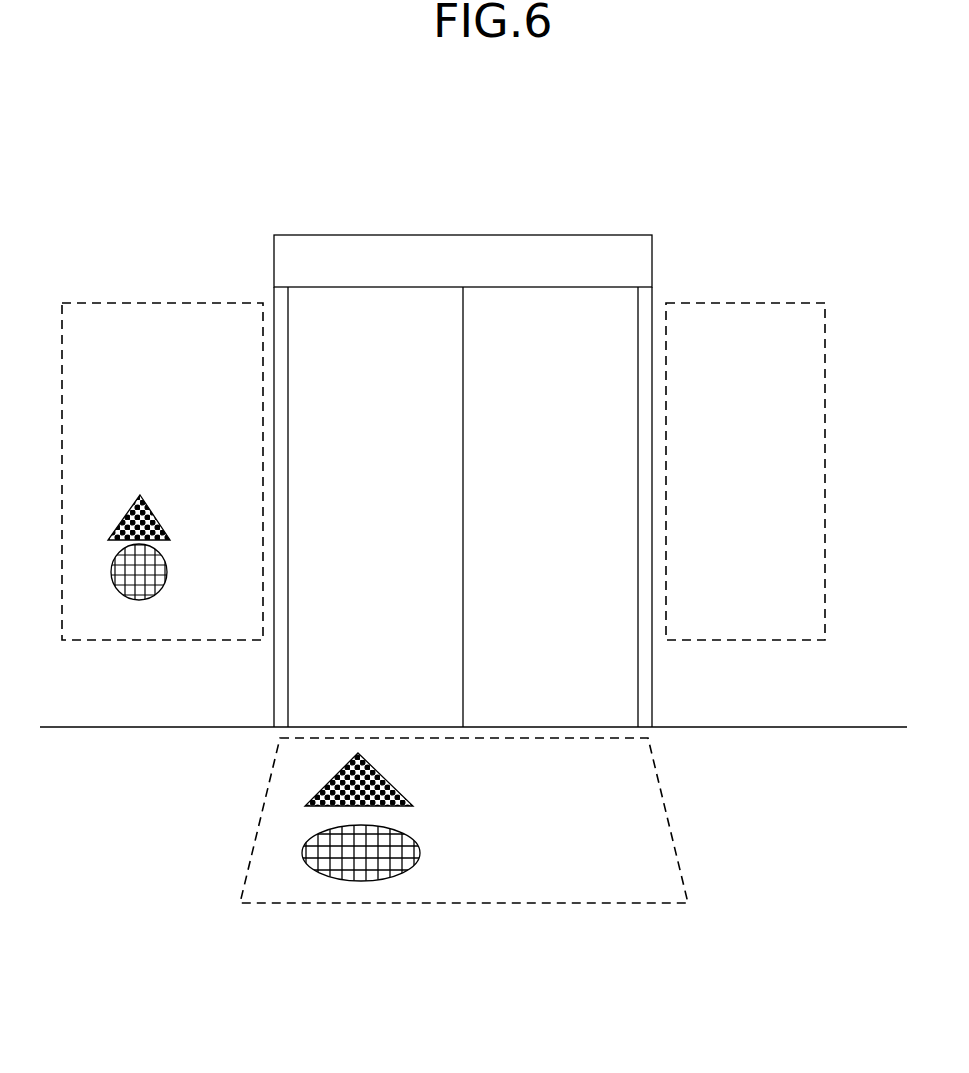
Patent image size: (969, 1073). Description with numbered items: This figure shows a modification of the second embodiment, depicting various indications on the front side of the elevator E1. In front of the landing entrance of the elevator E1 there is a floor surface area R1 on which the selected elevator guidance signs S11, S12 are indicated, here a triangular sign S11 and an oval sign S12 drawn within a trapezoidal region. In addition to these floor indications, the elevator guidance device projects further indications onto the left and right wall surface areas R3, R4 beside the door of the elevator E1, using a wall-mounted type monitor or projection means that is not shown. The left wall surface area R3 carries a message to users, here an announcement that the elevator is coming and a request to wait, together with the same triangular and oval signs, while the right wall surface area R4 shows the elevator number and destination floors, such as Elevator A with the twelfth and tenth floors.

The elevator E1 is at (448, 185).
The floor surface area R1 is at (673, 827).
The left wall surface area R3 is at (167, 300).
The right wall surface area R4 is at (738, 308).
The selected elevator guidance sign S11 is at (305, 803).
The selected elevator guidance sign S12 is at (303, 853).